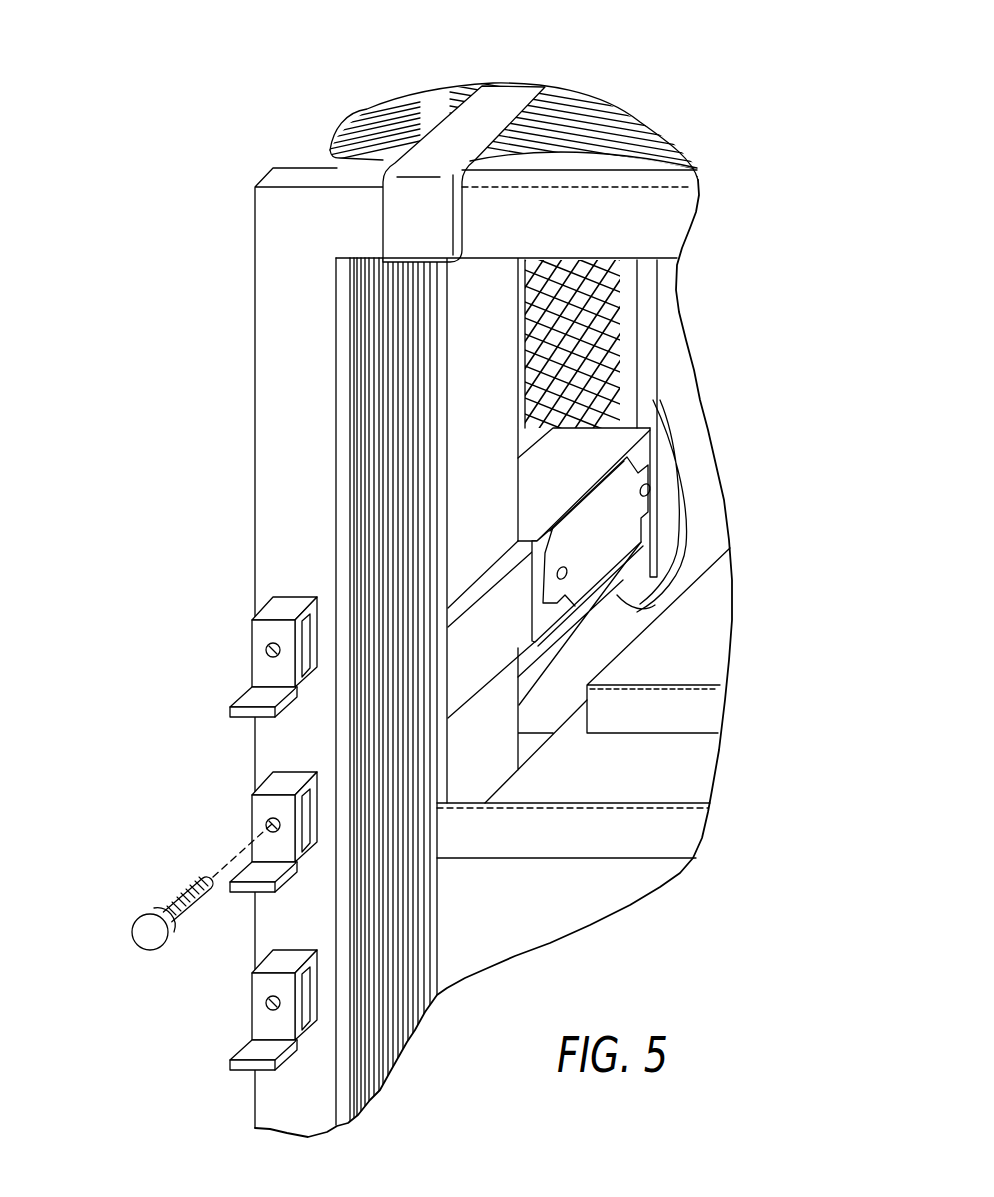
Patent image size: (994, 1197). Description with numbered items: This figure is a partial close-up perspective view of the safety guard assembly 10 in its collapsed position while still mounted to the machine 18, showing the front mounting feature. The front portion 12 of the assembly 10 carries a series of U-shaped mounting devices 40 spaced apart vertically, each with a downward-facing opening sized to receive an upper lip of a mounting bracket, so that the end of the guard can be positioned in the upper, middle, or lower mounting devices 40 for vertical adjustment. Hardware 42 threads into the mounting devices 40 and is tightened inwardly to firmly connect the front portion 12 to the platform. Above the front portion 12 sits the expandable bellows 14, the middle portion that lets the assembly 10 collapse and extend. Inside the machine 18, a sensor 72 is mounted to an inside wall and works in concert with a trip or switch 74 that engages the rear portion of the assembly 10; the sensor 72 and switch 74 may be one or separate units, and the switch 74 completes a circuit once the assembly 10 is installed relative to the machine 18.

The safety guard assembly 10 is at (158, 215).
The front portion 12 is at (293, 280).
The expandable bellows 14 is at (595, 122).
The machine 18 is at (673, 367).
The mounting devices 40 is at (253, 698).
The hardware 42 is at (147, 940).
The sensor 72 is at (605, 530).
The switch 74 is at (482, 633).